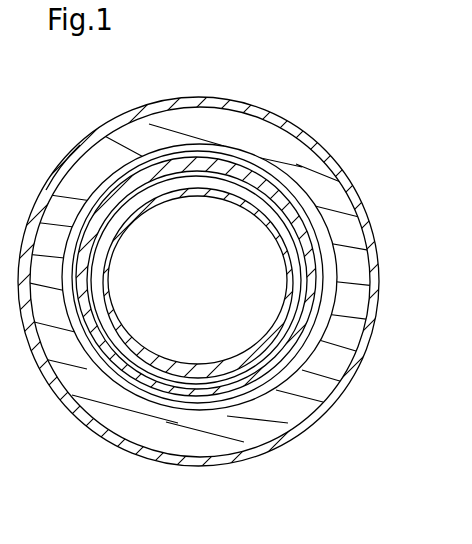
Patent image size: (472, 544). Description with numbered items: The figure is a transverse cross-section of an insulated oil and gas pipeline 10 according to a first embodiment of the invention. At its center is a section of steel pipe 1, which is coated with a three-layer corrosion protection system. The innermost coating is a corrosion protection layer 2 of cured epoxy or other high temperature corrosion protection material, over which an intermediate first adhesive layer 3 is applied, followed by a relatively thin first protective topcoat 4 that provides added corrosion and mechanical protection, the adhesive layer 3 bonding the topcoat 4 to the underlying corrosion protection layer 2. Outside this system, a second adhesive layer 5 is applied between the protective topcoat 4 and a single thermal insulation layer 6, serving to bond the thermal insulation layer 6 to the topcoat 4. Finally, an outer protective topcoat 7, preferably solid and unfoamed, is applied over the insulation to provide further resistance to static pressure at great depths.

The steel pipe 1 is at (235, 375).
The corrosion protection layer 2 is at (180, 382).
The first adhesive layer 3 is at (303, 230).
The first protective topcoat 4 is at (283, 190).
The second adhesive layer 5 is at (98, 372).
The thermal insulation layer 6 is at (150, 128).
The outer protective topcoat 7 is at (75, 152).
The insulated oil and gas pipeline 10 is at (240, 90).